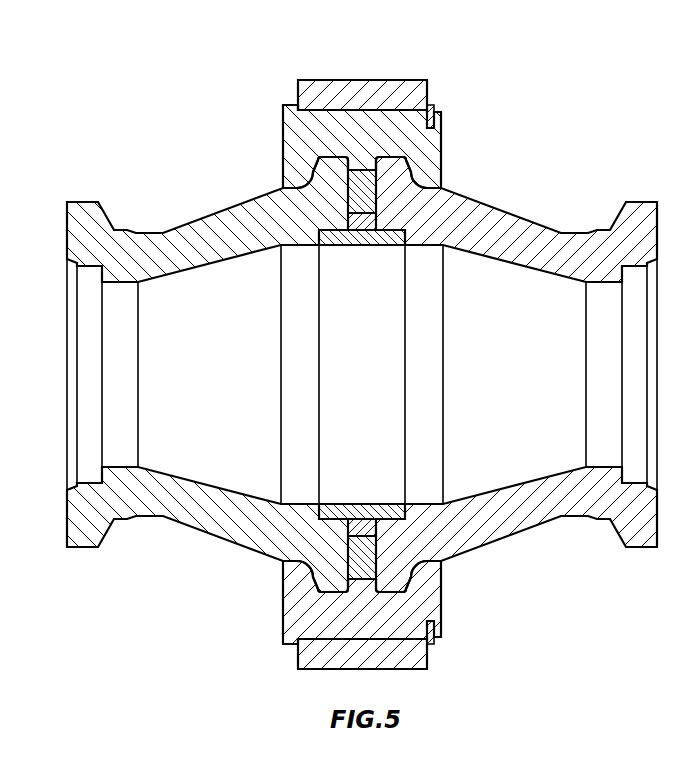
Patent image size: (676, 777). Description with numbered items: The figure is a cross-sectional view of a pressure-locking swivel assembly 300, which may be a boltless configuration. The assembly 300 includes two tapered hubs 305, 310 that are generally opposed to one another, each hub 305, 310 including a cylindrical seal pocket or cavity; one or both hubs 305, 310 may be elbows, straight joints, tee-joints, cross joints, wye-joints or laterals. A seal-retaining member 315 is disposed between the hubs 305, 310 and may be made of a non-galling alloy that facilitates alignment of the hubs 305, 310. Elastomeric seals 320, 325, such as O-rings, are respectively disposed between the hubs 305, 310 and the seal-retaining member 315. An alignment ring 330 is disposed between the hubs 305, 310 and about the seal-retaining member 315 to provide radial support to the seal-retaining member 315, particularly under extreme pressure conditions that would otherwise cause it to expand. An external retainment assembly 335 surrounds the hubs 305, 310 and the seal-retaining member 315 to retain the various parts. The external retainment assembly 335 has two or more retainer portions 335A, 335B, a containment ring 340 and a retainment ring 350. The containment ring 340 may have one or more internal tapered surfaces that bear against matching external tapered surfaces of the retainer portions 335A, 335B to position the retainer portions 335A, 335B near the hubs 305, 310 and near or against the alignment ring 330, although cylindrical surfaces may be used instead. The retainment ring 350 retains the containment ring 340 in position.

The pressure-locking swivel assembly 300 is at (336, 347).
The tapered hub 305 is at (200, 238).
The tapered hub 310 is at (538, 244).
The seal-retaining member 315 is at (358, 393).
The elastomeric seal 320 is at (318, 228).
The elastomeric seal 325 is at (416, 229).
The alignment ring 330 is at (366, 191).
The external retainment assembly 335 is at (354, 347).
The retainer portion 335A is at (301, 135).
The retainer portion 335B is at (303, 613).
The containment ring 340 is at (399, 90).
The retainment ring 350 is at (438, 106).